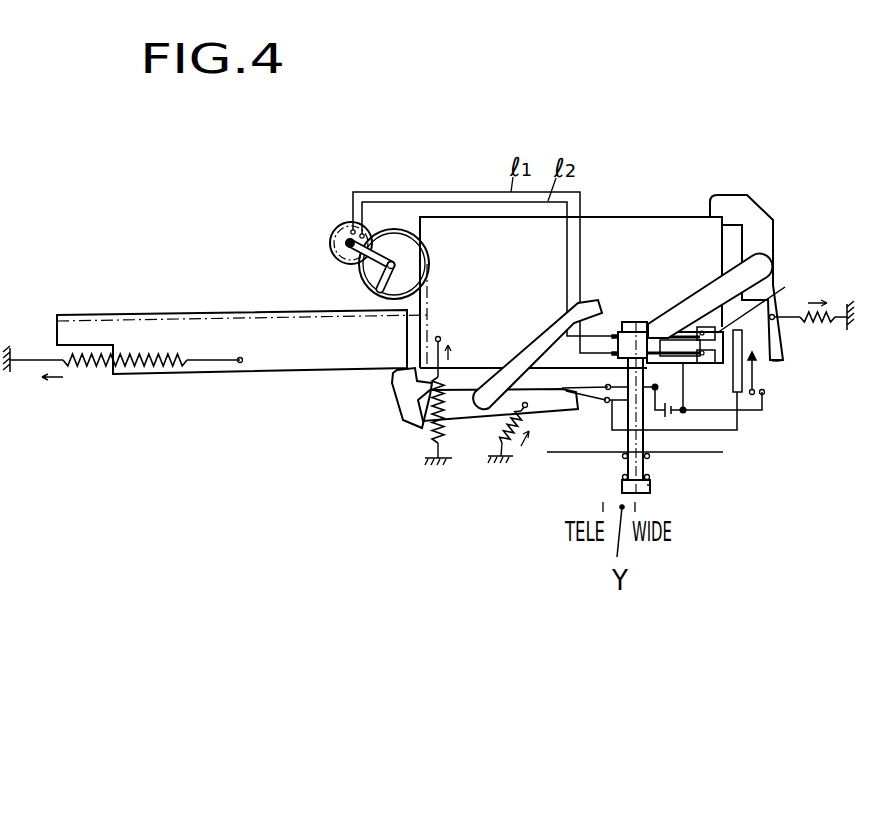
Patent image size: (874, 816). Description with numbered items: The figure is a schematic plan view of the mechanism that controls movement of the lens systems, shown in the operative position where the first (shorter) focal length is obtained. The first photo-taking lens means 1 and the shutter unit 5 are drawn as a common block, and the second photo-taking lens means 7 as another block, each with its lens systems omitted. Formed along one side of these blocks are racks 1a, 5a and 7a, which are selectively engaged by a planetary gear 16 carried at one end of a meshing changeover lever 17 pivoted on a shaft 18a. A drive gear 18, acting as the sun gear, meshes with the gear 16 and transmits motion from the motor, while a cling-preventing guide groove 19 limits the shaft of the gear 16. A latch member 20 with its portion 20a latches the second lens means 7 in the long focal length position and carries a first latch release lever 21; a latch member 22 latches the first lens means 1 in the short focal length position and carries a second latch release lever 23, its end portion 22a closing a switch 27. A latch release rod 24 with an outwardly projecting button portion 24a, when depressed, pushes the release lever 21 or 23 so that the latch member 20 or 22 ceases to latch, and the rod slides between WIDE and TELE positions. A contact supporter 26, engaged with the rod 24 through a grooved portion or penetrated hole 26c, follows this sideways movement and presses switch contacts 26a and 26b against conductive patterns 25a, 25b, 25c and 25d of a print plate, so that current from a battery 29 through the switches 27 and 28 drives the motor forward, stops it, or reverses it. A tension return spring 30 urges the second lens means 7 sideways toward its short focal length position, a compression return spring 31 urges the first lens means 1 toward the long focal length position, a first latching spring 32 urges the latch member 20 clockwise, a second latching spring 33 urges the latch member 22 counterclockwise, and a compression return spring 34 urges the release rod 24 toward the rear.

The first photo-taking lens means 1 is at (571, 258).
The shutter unit 5 is at (571, 258).
The rack 1a is at (571, 258).
The rack 5a is at (421, 217).
The second photo-taking lens means 7 is at (242, 324).
The rack 7a is at (161, 316).
The gear 16 is at (367, 275).
The meshing changeover lever 17 is at (343, 263).
The drive gear 18 is at (341, 228).
The shaft 18a is at (345, 243).
The cling-preventing guide groove 19 is at (378, 300).
The latch member 20 is at (400, 404).
The latch member portion 20a is at (560, 403).
The first latch release lever 21 is at (540, 335).
The latch member 22 is at (757, 214).
The end portion 22a is at (783, 360).
The second latch release lever 23 is at (713, 280).
The latch release rod 24 is at (641, 463).
The button portion 24a is at (651, 490).
The electrically conductive pattern 25a is at (776, 303).
The electrically conductive pattern 25b is at (738, 395).
The electrically conductive pattern 25c is at (680, 364).
The electrically conductive pattern 25d is at (677, 330).
The contact supporter 26 is at (634, 322).
The switch contact 26a is at (700, 364).
The switch contact 26b is at (655, 330).
The grooved portion or penetrated hole 26c is at (620, 320).
The switch 27 is at (765, 372).
The switch 28 is at (598, 398).
The battery 29 is at (662, 364).
The tension return spring 30 is at (87, 366).
The compression return spring 31 is at (437, 427).
The first latching spring 32 is at (500, 438).
The second latching spring 33 is at (822, 321).
The compression return spring 34 is at (622, 485).